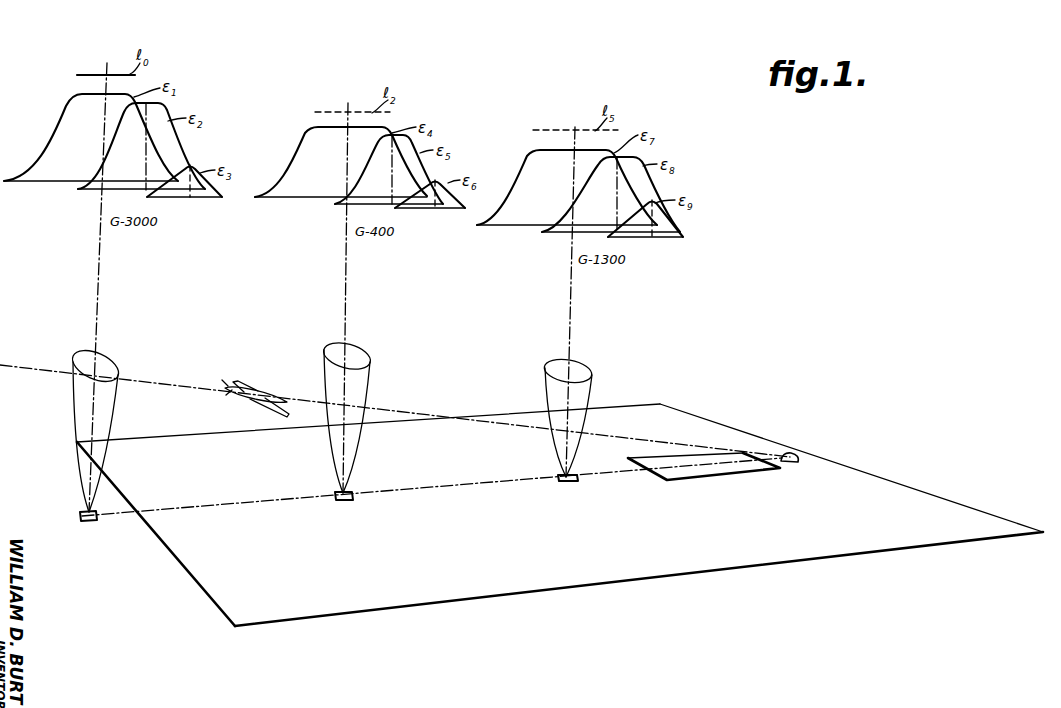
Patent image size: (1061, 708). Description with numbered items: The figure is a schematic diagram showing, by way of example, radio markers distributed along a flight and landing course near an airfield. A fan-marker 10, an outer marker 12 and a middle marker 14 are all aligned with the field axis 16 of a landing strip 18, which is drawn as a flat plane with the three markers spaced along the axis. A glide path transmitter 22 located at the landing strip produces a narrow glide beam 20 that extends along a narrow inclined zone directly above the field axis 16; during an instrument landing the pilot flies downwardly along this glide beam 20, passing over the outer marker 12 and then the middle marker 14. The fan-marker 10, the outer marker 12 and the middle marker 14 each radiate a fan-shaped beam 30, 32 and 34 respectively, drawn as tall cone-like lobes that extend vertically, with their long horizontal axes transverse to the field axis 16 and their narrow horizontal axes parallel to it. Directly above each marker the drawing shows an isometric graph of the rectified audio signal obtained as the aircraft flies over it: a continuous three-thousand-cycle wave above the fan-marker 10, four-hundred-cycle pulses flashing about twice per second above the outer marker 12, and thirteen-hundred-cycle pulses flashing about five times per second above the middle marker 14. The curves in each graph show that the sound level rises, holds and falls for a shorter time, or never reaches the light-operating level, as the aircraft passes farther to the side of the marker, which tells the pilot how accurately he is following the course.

The fan-marker 10 is at (96, 518).
The outer marker 12 is at (351, 500).
The middle marker 14 is at (576, 481).
The field axis 16 is at (489, 480).
The landing strip 18 is at (711, 474).
The glide beam 20 is at (394, 413).
The glide path transmitter 22 is at (798, 455).
The fan-shaped beam 30 is at (117, 425).
The fan-shaped beam 32 is at (360, 445).
The fan-shaped beam 34 is at (592, 383).